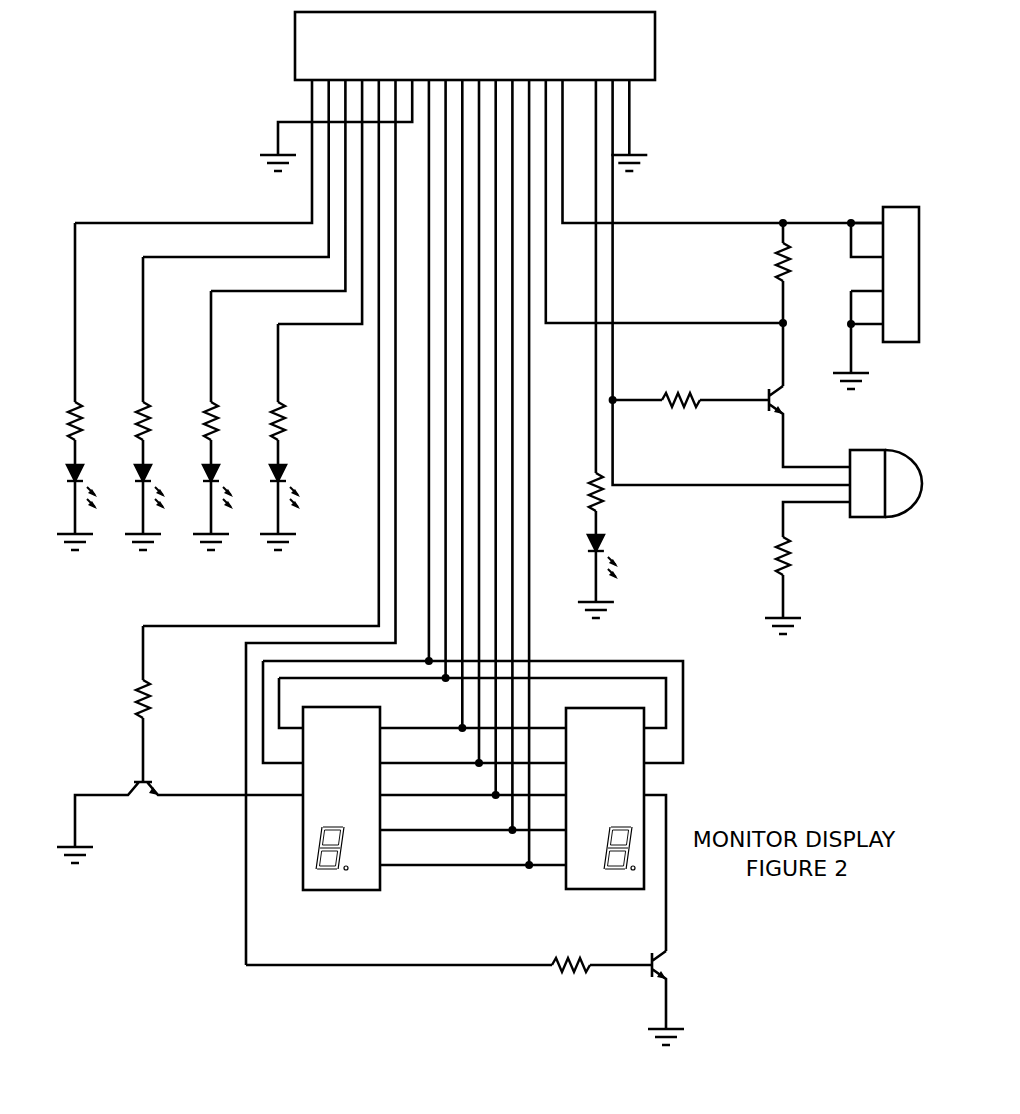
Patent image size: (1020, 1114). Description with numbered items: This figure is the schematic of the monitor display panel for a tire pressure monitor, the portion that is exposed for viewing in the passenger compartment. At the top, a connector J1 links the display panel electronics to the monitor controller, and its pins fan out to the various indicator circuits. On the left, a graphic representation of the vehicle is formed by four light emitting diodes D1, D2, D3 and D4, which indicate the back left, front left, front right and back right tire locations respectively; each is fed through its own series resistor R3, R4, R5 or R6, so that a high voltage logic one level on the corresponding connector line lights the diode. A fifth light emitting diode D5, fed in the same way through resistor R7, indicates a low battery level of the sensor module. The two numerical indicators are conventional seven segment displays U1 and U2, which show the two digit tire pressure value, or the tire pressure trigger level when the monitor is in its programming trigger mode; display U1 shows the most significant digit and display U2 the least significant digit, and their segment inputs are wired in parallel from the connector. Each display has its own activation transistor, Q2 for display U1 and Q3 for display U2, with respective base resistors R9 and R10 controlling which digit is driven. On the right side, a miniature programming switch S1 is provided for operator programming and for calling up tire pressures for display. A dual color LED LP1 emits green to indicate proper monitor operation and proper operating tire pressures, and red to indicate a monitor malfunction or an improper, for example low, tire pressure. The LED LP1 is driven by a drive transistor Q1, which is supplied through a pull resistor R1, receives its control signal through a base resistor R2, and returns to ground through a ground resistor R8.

The connector J1 is at (479, 488).
The miniature programming switch S1 is at (876, 284).
The pull resistor R1 is at (769, 304).
The base resistor R2 is at (691, 386).
The resistor R3 is at (61, 344).
The resistor R4 is at (129, 361).
The resistor R5 is at (197, 378).
The resistor R6 is at (264, 394).
The resistor R7 is at (582, 504).
The ground resistor R8 is at (799, 568).
The base resistor R9 is at (129, 704).
The base resistor R10 is at (449, 951).
The light emitting diode D1 is at (68, 507).
The light emitting diode D2 is at (136, 507).
The light emitting diode D3 is at (204, 507).
The light emitting diode D4 is at (271, 507).
The light emitting diode D5 is at (589, 576).
The drive transistor Q1 is at (799, 416).
The activation transistor Q2 is at (180, 811).
The activation transistor Q3 is at (688, 998).
The dual color LED LP1 is at (886, 469).
The seven segment numerical display U1 is at (341, 815).
The seven segment numerical display U2 is at (616, 829).